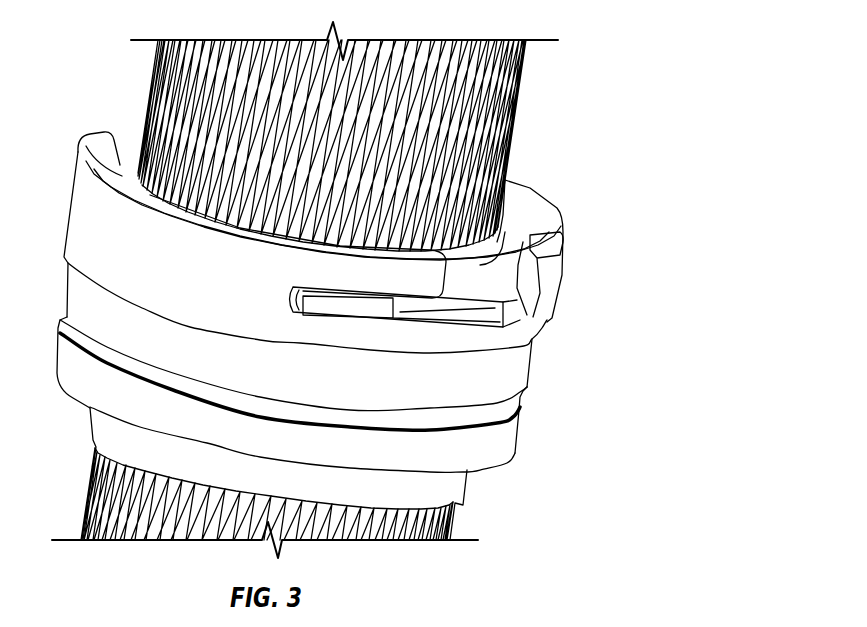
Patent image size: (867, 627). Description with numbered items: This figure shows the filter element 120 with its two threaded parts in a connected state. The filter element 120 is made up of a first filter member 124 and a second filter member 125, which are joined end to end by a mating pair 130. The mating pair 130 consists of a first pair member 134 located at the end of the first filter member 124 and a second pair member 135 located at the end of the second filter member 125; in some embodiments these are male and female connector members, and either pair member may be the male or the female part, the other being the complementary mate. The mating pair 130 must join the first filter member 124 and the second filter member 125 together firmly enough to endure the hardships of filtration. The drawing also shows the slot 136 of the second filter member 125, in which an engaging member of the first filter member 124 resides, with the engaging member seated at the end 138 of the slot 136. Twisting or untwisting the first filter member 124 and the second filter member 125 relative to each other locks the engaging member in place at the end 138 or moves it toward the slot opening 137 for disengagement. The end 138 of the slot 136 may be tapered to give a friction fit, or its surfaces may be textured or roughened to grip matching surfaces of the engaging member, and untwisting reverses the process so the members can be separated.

The filter element 120 is at (405, 302).
The first filter member 124 is at (513, 126).
The second filter member 125 is at (450, 525).
The mating pair 130 is at (578, 331).
The first pair member 134 is at (553, 172).
The second pair member 135 is at (549, 385).
The slot 136 is at (488, 304).
The slot opening 137 is at (507, 265).
The end of slot 138 is at (290, 300).